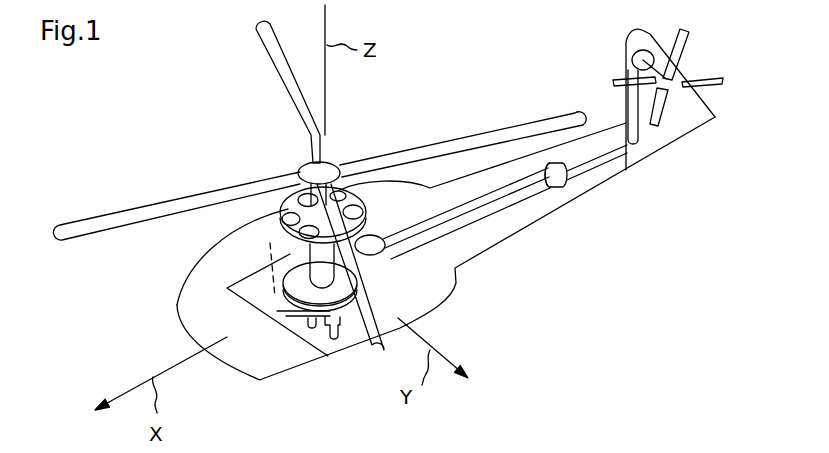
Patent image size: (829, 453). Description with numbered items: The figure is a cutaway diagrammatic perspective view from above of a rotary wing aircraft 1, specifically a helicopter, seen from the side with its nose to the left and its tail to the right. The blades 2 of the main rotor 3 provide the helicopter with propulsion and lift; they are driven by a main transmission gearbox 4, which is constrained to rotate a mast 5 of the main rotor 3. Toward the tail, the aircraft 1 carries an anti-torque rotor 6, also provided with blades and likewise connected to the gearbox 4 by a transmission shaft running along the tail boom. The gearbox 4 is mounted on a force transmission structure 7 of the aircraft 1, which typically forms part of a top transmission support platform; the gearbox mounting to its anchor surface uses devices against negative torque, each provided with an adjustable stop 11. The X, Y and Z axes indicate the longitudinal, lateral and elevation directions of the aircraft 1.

The rotary wing aircraft 1 is at (547, 237).
The blades 2 is at (267, 50).
The main rotor 3 is at (170, 188).
The main transmission gearbox 4 is at (275, 280).
The mast 5 is at (283, 200).
The anti-torque rotor 6 is at (700, 65).
The force transmission structure 7 is at (313, 343).
The adjustable stop 11 is at (540, 452).